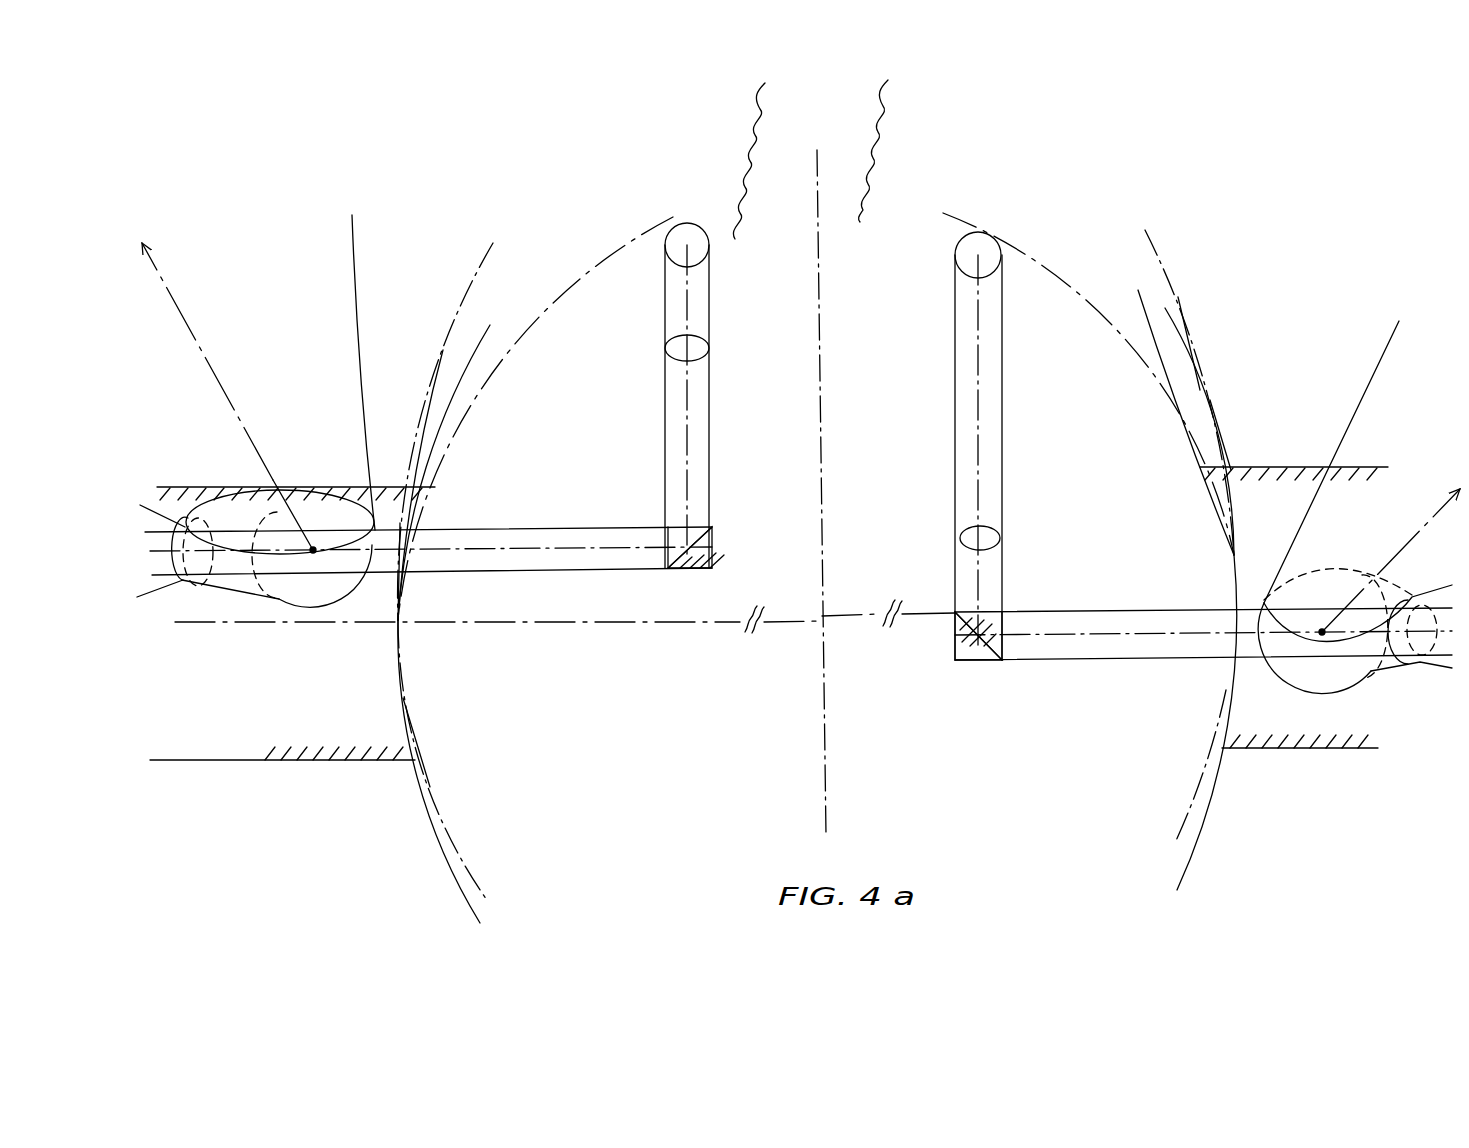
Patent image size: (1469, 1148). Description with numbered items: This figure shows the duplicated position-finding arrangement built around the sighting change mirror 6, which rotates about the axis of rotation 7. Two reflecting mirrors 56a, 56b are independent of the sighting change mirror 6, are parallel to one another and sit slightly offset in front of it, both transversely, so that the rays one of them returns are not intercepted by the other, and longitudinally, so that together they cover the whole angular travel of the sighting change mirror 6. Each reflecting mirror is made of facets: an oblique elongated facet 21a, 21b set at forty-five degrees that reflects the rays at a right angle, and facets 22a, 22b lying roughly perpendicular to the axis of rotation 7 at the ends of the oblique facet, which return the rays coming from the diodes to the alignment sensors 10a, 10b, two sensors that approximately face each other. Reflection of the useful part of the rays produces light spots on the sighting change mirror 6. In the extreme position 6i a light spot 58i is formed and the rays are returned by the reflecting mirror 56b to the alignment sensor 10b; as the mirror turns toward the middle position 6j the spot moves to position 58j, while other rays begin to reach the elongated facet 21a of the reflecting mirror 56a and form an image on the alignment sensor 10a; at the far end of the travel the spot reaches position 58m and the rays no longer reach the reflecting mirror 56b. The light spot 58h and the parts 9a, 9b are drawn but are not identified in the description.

The sighting change mirror 6 is at (1137, 435).
The extreme angular position of the sighting change mirror 6i is at (1163, 258).
The middle position of the sighting change mirror 6j is at (1173, 320).
The axis of rotation 7 is at (362, 622).
The support post / tube 9a is at (950, 625).
The support post / tube 9b is at (723, 542).
The alignment sensor 10a is at (1410, 697).
The alignment sensor 10b is at (203, 607).
The elongated facet 21a is at (987, 643).
The elongated facet 21b is at (680, 553).
The facet 22a is at (1005, 645).
The facet 22b is at (668, 552).
The reflecting mirror 56a is at (938, 652).
The reflecting mirror 56b is at (720, 568).
The light spot 58h is at (988, 252).
The light spot 58i is at (697, 243).
The light spot position 58j is at (708, 348).
The light spot position 58m is at (1003, 538).